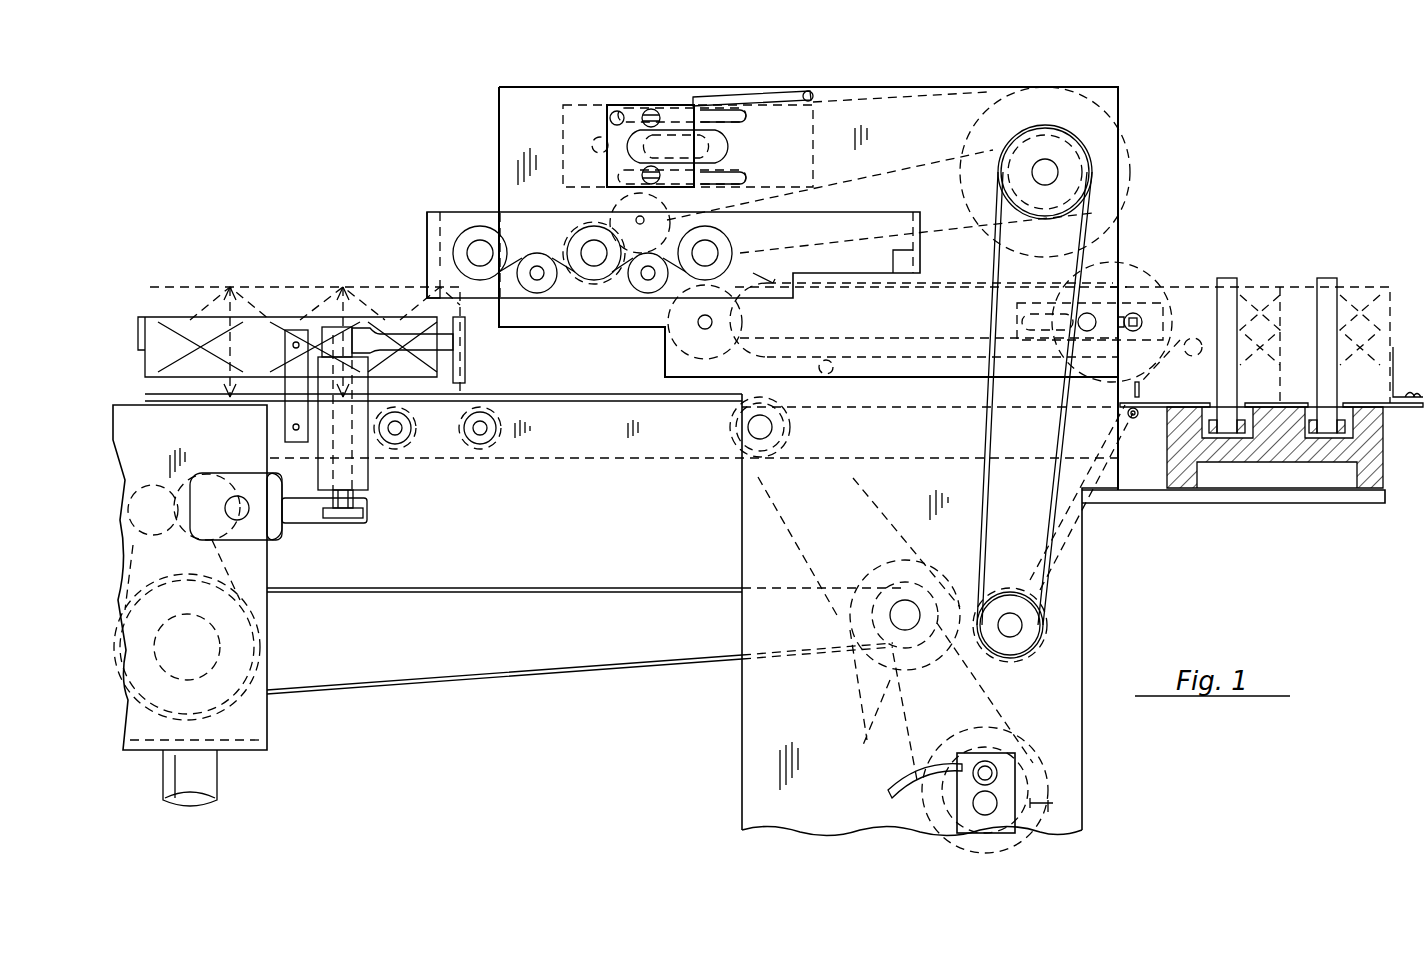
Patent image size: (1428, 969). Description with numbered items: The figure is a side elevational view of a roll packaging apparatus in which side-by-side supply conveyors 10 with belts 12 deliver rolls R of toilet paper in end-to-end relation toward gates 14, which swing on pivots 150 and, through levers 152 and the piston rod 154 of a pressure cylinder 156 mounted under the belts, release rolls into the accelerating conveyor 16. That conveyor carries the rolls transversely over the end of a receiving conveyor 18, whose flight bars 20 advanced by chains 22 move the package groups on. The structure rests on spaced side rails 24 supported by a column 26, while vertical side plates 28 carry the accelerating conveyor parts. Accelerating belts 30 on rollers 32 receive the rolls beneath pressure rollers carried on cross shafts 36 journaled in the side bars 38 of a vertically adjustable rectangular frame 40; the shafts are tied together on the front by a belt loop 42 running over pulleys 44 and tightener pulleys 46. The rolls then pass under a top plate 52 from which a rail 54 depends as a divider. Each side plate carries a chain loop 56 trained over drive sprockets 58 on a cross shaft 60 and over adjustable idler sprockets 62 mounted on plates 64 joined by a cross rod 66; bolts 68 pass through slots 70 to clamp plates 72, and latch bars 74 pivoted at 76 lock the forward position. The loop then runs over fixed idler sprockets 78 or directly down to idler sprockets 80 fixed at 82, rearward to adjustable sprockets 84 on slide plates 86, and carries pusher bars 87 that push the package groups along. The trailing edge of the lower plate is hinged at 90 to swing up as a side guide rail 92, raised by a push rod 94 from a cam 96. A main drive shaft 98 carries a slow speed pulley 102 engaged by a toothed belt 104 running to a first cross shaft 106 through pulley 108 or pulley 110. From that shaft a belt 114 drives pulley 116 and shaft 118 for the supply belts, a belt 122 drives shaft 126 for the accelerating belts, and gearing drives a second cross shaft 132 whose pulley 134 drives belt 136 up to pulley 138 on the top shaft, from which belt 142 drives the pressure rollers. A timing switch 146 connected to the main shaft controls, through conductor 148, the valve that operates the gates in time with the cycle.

The supply conveyors 10 is at (183, 272).
The belts 12 is at (150, 393).
The gates 14 is at (465, 362).
The accelerating conveyor 16 is at (471, 156).
The receiving conveyor 18 is at (1356, 520).
The flight bars 20 is at (1330, 278).
The chains 22 is at (1293, 440).
The side rails 24 is at (678, 442).
The column 26 is at (240, 730).
The vertical side plates 28 is at (1100, 248).
The accelerating belts 30 is at (596, 401).
The rollers 32 is at (508, 444).
The cross shafts 36 is at (708, 253).
The side bars 38 is at (837, 223).
The rectangular frame 40 is at (428, 235).
The belt loop 42 is at (496, 280).
The pulleys 44 is at (594, 253).
The tightener pulleys 46 is at (540, 288).
The top plate 52 is at (947, 287).
The rail 54 is at (833, 341).
The chain loop 56 is at (893, 98).
The drive sprockets 58 is at (997, 93).
The cross shaft 60 is at (1047, 172).
The idler sprockets 62 is at (617, 111).
The plates 64 is at (598, 138).
The cross rod 66 is at (563, 128).
The bolts 68 is at (652, 109).
The slots 70 is at (730, 177).
The clamp plates 72 is at (668, 107).
The latch bars 74 is at (768, 98).
The pivot 76 is at (812, 94).
The fixed idler sprockets 78 is at (613, 205).
The idler sprockets 80 is at (747, 328).
The mounting 82 is at (700, 325).
The adjustable sprockets 84 is at (1065, 340).
The slide plates 86 is at (1013, 318).
The pusher bars 87 is at (1197, 340).
The hinge 90 is at (1136, 420).
The side guide rail 92 is at (1140, 392).
The push rod 94 is at (1040, 552).
The cam 96 is at (1033, 580).
The main drive shaft 98 is at (990, 803).
The slow speed pulley 102 is at (1060, 807).
The toothed belt 104 is at (874, 705).
The first cross shaft 106 is at (910, 620).
The pulley 108 is at (933, 570).
The pulley 110 is at (883, 560).
The belt 114 is at (603, 667).
The pulley 116 is at (247, 640).
The shaft 118 is at (220, 653).
The belt 122 is at (780, 527).
The shaft 126 is at (757, 436).
The second cross shaft 132 is at (1012, 625).
The pulley 134 is at (1032, 633).
The belt 136 is at (983, 427).
The pulley 138 is at (1060, 188).
The belt 142 is at (910, 160).
The timing switch 146 is at (1005, 773).
The conductor 148 is at (967, 763).
The pivots 150 is at (347, 473).
The levers 152 is at (356, 512).
The piston rod 154 is at (366, 525).
The pressure cylinder 156 is at (280, 538).
The rolls R is at (292, 285).